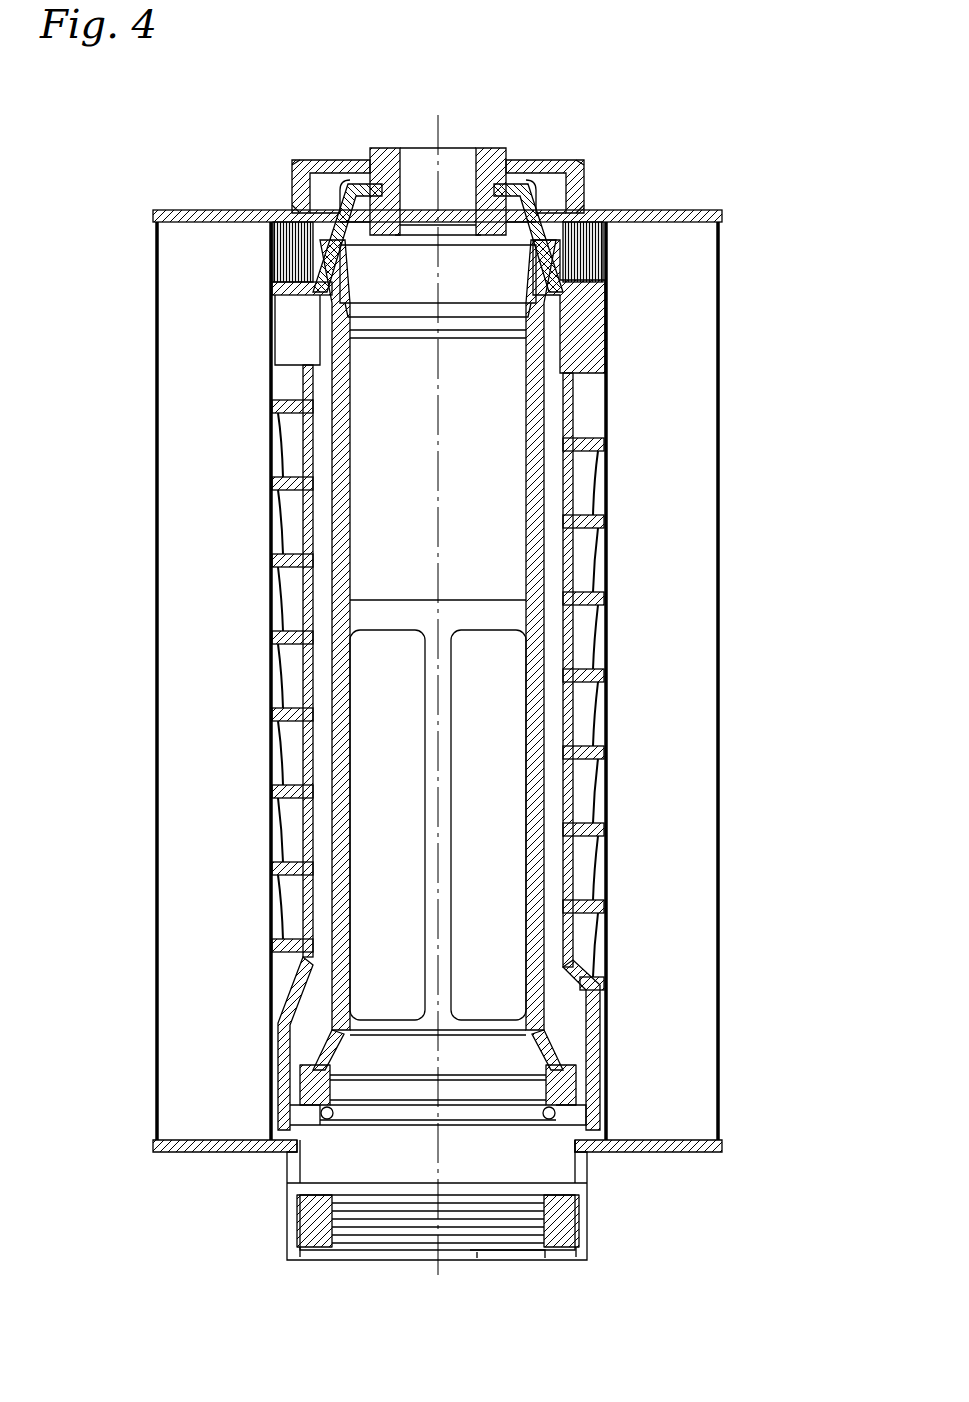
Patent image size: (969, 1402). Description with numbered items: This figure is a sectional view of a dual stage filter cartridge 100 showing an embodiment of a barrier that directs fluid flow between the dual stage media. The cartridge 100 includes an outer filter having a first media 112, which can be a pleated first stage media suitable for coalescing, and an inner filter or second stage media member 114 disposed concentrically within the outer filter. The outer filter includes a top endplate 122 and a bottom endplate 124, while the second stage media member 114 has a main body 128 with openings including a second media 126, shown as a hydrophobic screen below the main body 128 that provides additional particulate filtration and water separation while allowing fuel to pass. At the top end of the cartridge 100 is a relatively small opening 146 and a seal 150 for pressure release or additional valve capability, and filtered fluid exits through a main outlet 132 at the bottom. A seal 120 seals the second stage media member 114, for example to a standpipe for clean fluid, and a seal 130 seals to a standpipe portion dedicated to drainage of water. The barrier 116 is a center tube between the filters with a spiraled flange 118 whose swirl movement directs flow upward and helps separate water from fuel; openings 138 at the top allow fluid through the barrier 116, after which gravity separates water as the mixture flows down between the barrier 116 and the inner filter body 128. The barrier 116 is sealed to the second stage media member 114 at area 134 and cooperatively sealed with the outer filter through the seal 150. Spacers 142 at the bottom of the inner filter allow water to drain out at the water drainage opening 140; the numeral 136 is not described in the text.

The dual stage filter cartridge 100 is at (670, 130).
The first media 112 is at (705, 340).
The second stage media member 114 is at (545, 578).
The barrier 116 is at (598, 318).
The spiraled flange 118 is at (602, 675).
The seal 120 is at (600, 1102).
The top endplate 122 is at (185, 210).
The bottom endplate 124 is at (180, 1153).
The second media 126 is at (375, 815).
The main body 128 is at (545, 508).
The seal 130 is at (303, 1226).
The main outlet 132 is at (458, 1105).
The sealing area 134 is at (332, 280).
The left support ribs 136 is at (270, 410).
The openings 138 is at (287, 336).
The water drainage opening 140 is at (292, 1112).
The spacers 142 is at (312, 1052).
The opening 146 is at (447, 165).
The seal 150 is at (492, 150).